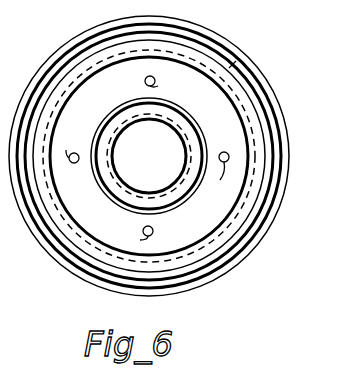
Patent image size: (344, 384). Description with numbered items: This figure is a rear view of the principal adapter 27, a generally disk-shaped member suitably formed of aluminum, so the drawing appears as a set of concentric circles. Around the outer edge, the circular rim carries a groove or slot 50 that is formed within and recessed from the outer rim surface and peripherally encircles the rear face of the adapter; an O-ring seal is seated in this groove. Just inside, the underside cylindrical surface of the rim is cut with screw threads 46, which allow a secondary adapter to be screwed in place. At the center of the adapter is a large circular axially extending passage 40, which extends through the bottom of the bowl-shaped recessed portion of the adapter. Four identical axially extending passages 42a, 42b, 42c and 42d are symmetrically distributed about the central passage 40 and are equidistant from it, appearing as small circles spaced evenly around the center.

The principal adapter 27 is at (58, 54).
The groove or slot 50 is at (232, 63).
The screw threads 46 is at (250, 98).
The large circular axially extending passage 40 is at (163, 170).
The axially extending passage 42a is at (169, 83).
The axially extending passage 42b is at (124, 230).
The axially extending passage 42c is at (209, 185).
The axially extending passage 42d is at (73, 143).